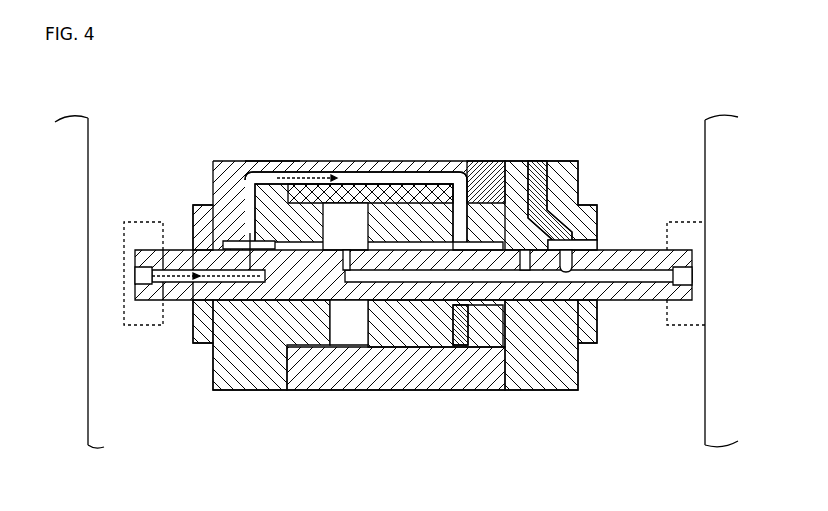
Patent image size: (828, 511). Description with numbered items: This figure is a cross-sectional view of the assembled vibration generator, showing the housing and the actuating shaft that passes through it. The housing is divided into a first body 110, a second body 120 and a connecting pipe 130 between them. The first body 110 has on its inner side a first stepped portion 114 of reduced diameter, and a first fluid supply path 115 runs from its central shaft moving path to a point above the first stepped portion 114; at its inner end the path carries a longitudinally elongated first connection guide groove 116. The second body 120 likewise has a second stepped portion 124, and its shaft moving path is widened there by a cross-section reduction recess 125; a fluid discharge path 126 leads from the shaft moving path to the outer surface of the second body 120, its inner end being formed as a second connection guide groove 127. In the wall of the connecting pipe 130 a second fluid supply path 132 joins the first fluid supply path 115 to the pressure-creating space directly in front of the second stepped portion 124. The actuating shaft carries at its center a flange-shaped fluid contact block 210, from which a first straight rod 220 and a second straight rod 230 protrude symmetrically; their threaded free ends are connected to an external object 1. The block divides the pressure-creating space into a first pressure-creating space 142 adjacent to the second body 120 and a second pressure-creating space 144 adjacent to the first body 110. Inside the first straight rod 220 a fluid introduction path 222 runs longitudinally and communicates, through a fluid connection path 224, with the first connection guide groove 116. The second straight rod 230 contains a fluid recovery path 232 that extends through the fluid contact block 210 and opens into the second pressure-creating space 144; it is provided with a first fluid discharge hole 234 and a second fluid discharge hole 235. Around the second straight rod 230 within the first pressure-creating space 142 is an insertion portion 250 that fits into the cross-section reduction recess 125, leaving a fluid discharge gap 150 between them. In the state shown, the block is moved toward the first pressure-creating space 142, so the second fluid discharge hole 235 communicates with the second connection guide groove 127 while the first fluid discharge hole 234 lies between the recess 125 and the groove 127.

The external object 1 is at (96, 447).
The first body 110 is at (245, 161).
The first stepped portion 114 is at (305, 380).
The first fluid supply path 115 is at (270, 161).
The first connection guide groove 116 is at (240, 243).
The second body 120 is at (572, 175).
The second stepped portion 124 is at (487, 330).
The cross-section reduction recess 125 is at (495, 245).
The fluid discharge path 126 is at (552, 200).
The second connection guide groove 127 is at (585, 240).
The connecting pipe 130 is at (470, 190).
The second fluid supply path 132 is at (378, 195).
The first pressure-creating space 142 is at (432, 238).
The second pressure-creating space 144 is at (345, 220).
The fluid discharge gap 150 is at (535, 185).
The fluid contact block 210 is at (400, 180).
The first straight rod 220 is at (195, 252).
The fluid introduction path 222 is at (200, 340).
The fluid connection path 224 is at (245, 335).
The second straight rod 230 is at (633, 302).
The fluid recovery path 232 is at (400, 330).
The first fluid discharge hole 234 is at (555, 303).
The second fluid discharge hole 235 is at (598, 340).
The insertion portion 250 is at (455, 335).